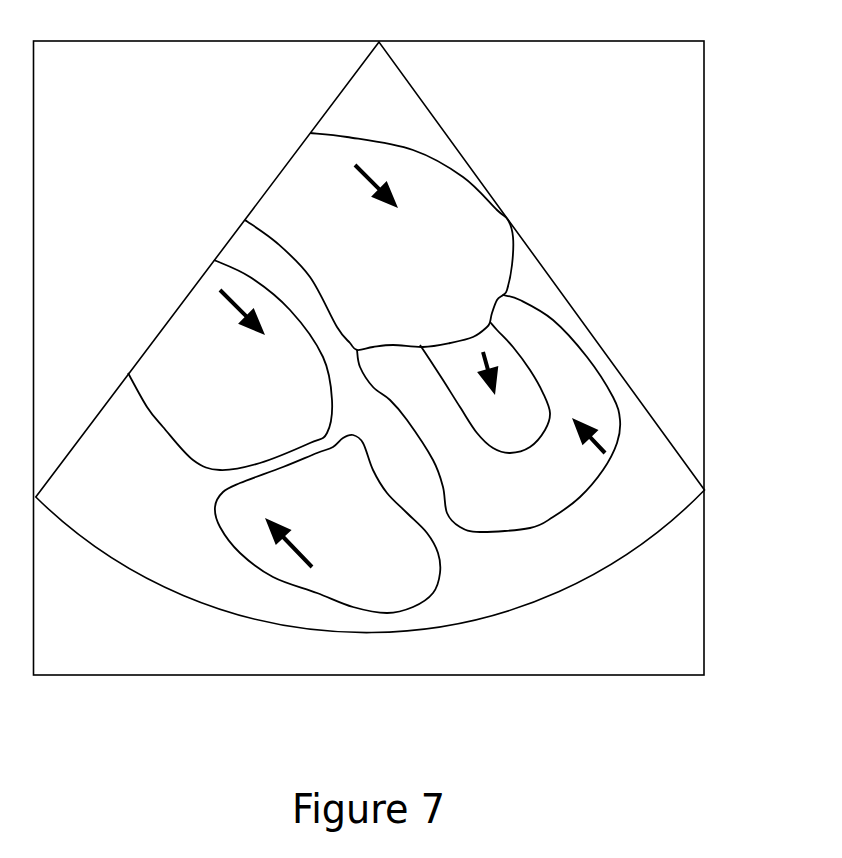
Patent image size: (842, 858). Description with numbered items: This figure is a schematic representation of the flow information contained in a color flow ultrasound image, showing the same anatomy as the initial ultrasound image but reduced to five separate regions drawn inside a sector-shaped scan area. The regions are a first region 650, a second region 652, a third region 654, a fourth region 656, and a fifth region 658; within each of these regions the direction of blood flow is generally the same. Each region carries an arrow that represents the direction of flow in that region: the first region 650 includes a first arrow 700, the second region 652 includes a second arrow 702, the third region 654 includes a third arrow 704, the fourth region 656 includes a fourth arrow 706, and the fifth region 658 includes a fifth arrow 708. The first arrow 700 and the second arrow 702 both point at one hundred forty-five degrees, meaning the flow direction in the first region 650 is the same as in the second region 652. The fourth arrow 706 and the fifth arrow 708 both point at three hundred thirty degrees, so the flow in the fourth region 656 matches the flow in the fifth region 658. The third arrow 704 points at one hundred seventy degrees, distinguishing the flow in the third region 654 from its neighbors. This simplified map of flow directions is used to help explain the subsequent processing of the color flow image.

The first region 650 is at (267, 416).
The second region 652 is at (447, 274).
The third region 654 is at (533, 429).
The fourth region 656 is at (551, 504).
The fifth region 658 is at (392, 566).
The first arrow 700 is at (242, 312).
The second arrow 702 is at (360, 173).
The third arrow 704 is at (487, 352).
The fourth arrow 706 is at (602, 440).
The fifth arrow 708 is at (290, 553).